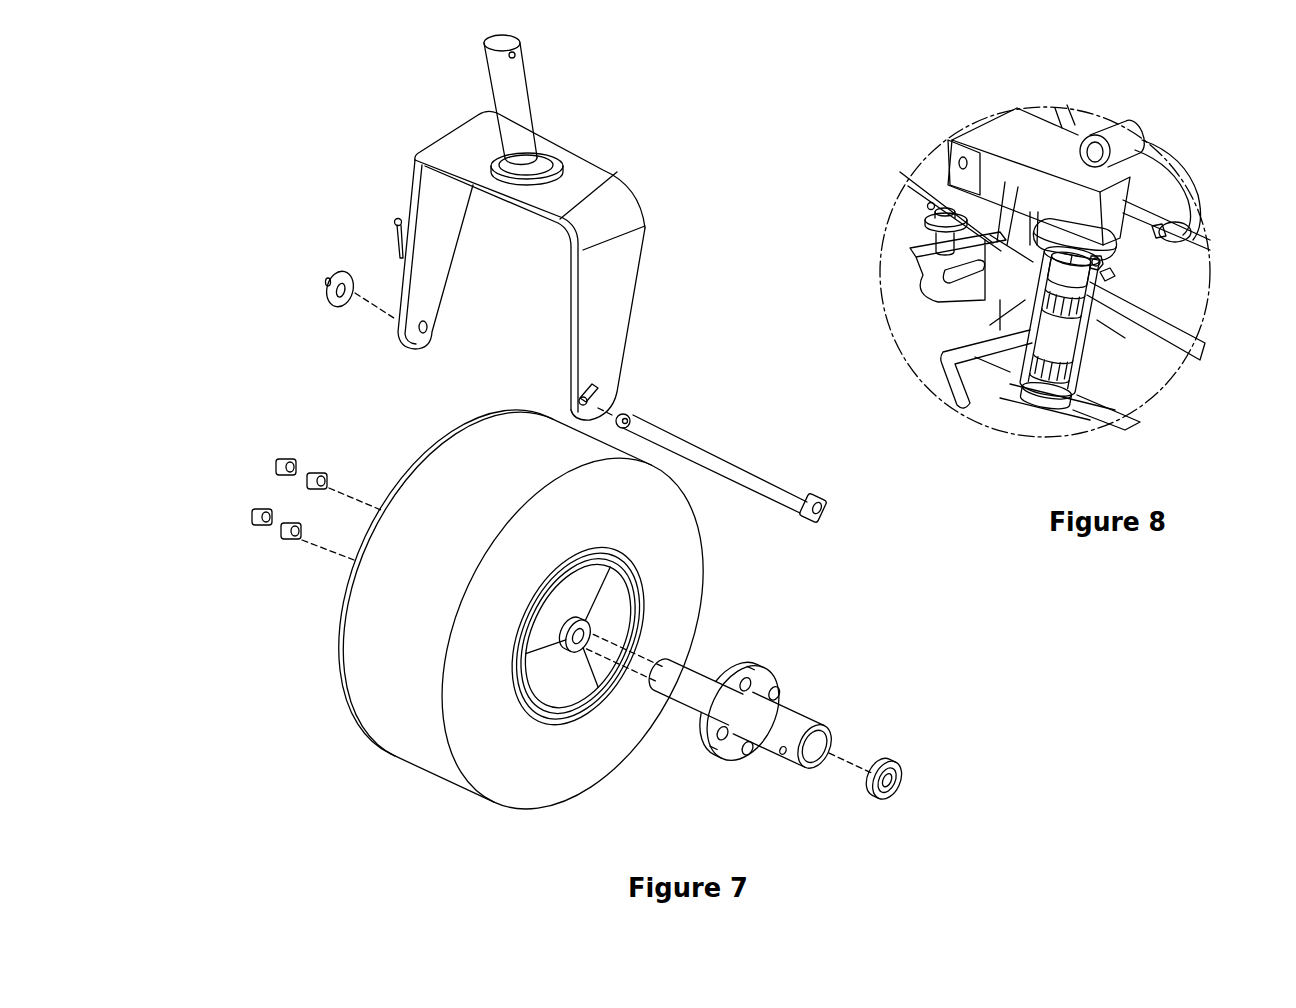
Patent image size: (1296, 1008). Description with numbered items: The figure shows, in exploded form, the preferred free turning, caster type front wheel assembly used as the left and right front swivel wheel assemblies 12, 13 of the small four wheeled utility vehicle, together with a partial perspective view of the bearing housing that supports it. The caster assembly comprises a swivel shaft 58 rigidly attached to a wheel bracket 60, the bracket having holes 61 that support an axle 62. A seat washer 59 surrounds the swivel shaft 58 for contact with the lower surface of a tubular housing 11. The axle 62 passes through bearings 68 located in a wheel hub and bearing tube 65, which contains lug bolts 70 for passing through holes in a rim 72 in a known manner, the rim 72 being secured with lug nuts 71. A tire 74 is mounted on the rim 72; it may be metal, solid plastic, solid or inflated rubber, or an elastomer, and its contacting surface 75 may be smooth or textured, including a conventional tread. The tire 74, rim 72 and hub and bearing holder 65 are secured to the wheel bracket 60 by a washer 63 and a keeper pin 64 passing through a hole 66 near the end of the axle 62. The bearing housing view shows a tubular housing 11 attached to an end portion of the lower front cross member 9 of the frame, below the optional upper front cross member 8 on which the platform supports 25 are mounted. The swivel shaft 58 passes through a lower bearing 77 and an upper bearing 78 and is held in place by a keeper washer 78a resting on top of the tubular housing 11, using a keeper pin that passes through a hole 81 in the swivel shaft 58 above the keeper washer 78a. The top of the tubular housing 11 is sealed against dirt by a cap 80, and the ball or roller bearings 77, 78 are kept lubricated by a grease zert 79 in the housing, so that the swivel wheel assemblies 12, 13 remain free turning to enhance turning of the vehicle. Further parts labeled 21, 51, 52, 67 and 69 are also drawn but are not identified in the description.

In FIG. 8, the upper front cross member 8 is at (1046, 182).
In FIG. 8, the lower front cross member 9 is at (1018, 297).
In FIG. 8, the tubular housing 11 is at (1099, 283).
In FIG. 7, the left front swivel wheel assembly 12 is at (533, 606).
In FIG. 7, the right front swivel wheel assembly 13 is at (366, 667).
In FIG. 8, the pivot hole 21 is at (1080, 150).
In FIG. 8, the platform supports 25 is at (1120, 143).
In FIG. 8, the bolt 51 is at (921, 219).
In FIG. 8, the bracket 52 is at (950, 256).
In FIG. 7, the swivel shaft 58 is at (505, 90).
In FIG. 8, the swivel shaft 58 is at (1060, 317).
In FIG. 7, the seat washer 59 is at (548, 158).
In FIG. 8, the seat washer 59 is at (1037, 398).
In FIG. 7, the wheel bracket 60 is at (618, 200).
In FIG. 8, the wheel bracket 60 is at (975, 347).
In FIG. 7, the holes 61 is at (434, 327).
In FIG. 7, the axle 62 is at (782, 492).
In FIG. 7, the washer 63 is at (338, 306).
In FIG. 7, the keeper pin 64 is at (396, 218).
In FIG. 7, the wheel hub and bearing tube 65 is at (764, 658).
In FIG. 7, the hole 66 is at (640, 419).
In FIG. 7, the bearing 67 is at (893, 764).
In FIG. 7, the bearings 68 is at (594, 626).
In FIG. 7, the grease hole 69 is at (783, 754).
In FIG. 7, the lug bolts 70 is at (720, 727).
In FIG. 7, the lug nuts 71 is at (255, 508).
In FIG. 7, the rim 72 is at (639, 582).
In FIG. 7, the tire 74 is at (514, 514).
In FIG. 7, the contacting surface 75 is at (430, 772).
In FIG. 8, the lower bearing 77 is at (1063, 398).
In FIG. 8, the upper bearing 78 is at (1030, 300).
In FIG. 8, the keeper washer 78a is at (1111, 335).
In FIG. 8, the grease zert 79 is at (1109, 275).
In FIG. 8, the cap 80 is at (1111, 263).
In FIG. 7, the hole 81 is at (516, 55).